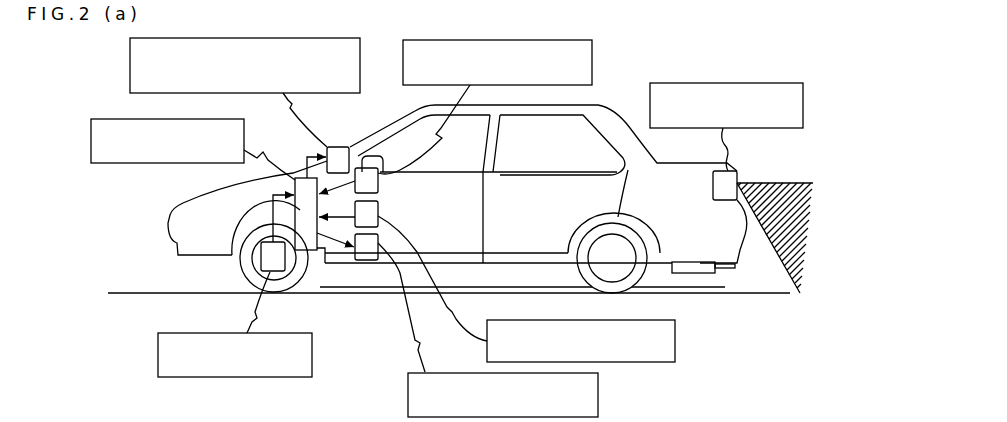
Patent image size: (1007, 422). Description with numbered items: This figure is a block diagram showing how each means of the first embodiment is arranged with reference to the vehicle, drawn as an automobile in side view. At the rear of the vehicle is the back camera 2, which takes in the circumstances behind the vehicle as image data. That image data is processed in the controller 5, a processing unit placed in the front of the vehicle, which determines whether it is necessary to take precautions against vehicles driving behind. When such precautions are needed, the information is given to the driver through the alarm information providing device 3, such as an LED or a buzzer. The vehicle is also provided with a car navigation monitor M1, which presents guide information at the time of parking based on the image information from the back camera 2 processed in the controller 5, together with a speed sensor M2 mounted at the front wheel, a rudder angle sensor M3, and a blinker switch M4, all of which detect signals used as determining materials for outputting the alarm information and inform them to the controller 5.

The car navigation monitor M1 is at (283, 38).
The speed sensor M2 is at (250, 377).
The rudder angle sensor M3 is at (543, 40).
The blinker switch M4 is at (675, 345).
The back camera 2 is at (743, 83).
The alarm information providing device 3 is at (598, 397).
The processing unit (controller) 5 is at (122, 163).